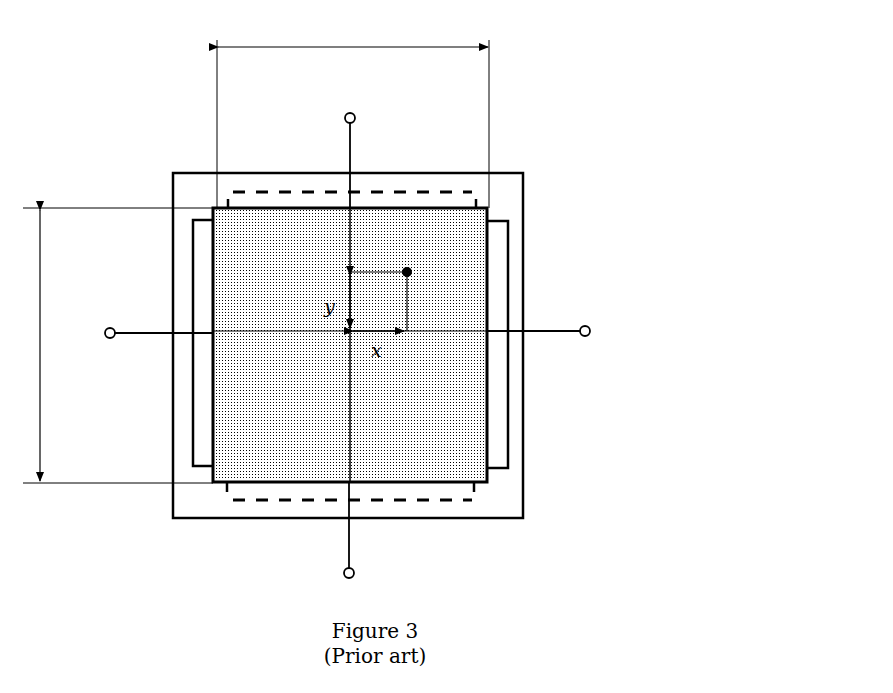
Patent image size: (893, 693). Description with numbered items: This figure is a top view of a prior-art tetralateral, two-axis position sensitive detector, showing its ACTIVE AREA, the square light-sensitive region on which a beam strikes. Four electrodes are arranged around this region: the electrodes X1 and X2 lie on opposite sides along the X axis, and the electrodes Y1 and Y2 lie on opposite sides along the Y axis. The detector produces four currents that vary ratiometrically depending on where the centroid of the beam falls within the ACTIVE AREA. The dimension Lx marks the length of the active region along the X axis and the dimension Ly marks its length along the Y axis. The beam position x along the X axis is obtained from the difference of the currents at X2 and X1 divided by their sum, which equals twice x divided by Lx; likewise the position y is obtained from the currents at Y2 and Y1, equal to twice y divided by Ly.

The X1 electrode X1 is at (155, 315).
The X2 electrode X2 is at (542, 313).
The Y1 electrode Y1 is at (368, 535).
The Y2 electrode Y2 is at (369, 156).
The X-axis active length Lx is at (353, 111).
The Y-axis active length Ly is at (108, 345).
The active area ACTIVE AREA is at (487, 480).